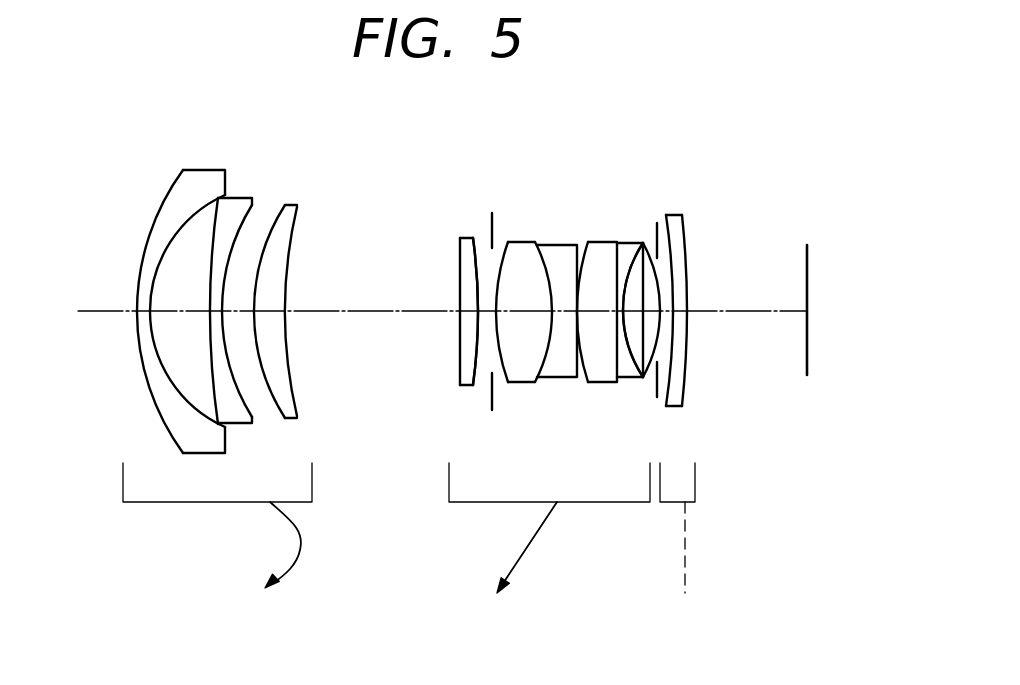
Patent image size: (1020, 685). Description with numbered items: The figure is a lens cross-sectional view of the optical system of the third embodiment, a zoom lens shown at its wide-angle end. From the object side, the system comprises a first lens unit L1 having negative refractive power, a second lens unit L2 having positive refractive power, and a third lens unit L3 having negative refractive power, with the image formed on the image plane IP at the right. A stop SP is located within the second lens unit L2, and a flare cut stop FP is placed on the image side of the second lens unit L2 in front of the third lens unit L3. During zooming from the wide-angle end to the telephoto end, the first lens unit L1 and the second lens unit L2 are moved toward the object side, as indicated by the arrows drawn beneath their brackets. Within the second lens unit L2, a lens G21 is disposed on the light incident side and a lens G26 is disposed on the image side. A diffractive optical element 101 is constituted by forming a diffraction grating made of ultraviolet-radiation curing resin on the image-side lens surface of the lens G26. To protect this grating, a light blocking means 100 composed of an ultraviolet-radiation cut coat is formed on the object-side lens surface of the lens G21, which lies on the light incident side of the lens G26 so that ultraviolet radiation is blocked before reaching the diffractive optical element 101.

The first lens unit L1 is at (217, 379).
The second lens unit L2 is at (539, 333).
The third lens unit L3 is at (702, 399).
The lens G21 is at (465, 238).
The lens G26 is at (650, 243).
The light blocking means 100 is at (482, 253).
The diffractive optical element 101 is at (680, 117).
The stop SP is at (493, 227).
The flare cut stop FP is at (656, 231).
The image plane IP is at (810, 260).